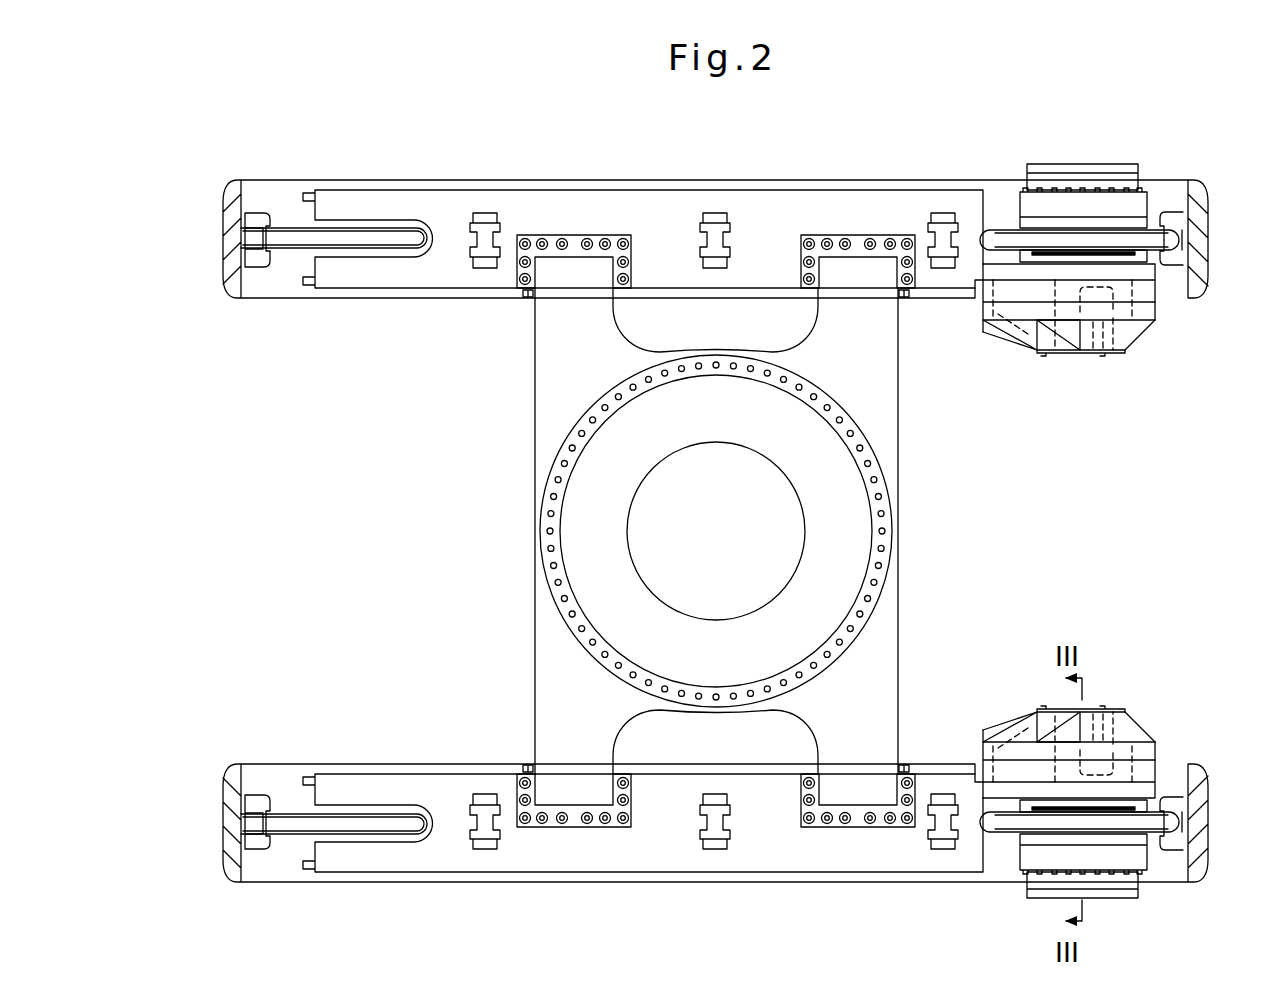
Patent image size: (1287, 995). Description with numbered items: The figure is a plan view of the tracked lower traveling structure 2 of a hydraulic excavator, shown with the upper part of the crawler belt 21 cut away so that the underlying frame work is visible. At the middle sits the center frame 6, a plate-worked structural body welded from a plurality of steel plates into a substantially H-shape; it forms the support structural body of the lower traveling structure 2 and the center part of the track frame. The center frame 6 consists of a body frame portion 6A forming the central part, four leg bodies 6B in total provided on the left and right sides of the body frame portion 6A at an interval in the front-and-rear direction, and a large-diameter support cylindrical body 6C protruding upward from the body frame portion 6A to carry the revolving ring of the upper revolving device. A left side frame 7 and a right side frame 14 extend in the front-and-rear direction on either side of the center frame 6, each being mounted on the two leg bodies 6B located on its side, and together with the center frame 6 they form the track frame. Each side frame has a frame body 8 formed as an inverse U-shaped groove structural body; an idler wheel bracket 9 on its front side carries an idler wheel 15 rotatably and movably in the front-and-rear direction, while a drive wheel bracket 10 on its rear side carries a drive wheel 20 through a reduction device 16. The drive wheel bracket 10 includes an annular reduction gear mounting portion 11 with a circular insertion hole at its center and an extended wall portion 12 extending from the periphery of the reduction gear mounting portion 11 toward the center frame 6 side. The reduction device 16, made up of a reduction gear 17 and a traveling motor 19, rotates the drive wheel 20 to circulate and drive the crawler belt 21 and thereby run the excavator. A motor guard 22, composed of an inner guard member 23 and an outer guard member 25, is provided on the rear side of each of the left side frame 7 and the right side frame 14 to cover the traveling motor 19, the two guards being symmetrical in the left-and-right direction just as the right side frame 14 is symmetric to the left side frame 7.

The lower traveling structure 2 is at (519, 462).
The center frame 6 is at (530, 538).
The body frame portion 6A is at (548, 624).
The leg bodies 6B is at (575, 270).
The support cylindrical body 6C is at (585, 425).
The left side frame 7 is at (398, 760).
The frame body 8 is at (685, 206).
The idler wheel bracket 9 is at (360, 205).
The drive wheel bracket 10 is at (1163, 274).
The reduction gear mounting portion 11 is at (1158, 270).
The extended wall portion 12 is at (1137, 268).
The right side frame 14 is at (398, 302).
The idler wheel 15 is at (289, 250).
The reduction device 16 is at (1152, 201).
The reduction gear 17 is at (1100, 176).
The traveling motor 19 is at (1103, 348).
The drive wheel 20 is at (1008, 237).
The crawler belt 21 is at (243, 238).
The motor guard 22 is at (1042, 360).
The inner guard member 23 is at (1001, 338).
The outer guard member 25 is at (1122, 336).